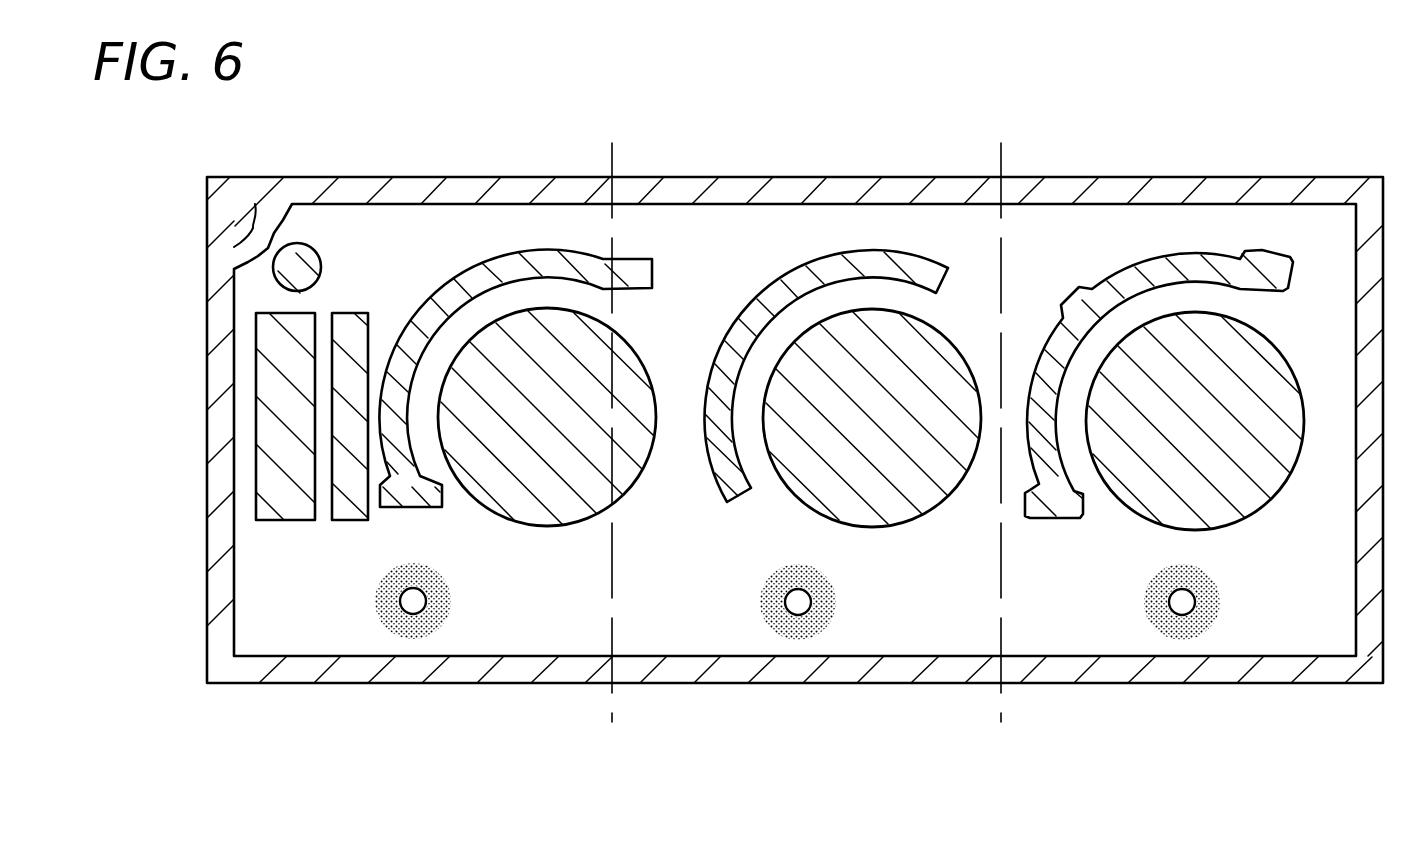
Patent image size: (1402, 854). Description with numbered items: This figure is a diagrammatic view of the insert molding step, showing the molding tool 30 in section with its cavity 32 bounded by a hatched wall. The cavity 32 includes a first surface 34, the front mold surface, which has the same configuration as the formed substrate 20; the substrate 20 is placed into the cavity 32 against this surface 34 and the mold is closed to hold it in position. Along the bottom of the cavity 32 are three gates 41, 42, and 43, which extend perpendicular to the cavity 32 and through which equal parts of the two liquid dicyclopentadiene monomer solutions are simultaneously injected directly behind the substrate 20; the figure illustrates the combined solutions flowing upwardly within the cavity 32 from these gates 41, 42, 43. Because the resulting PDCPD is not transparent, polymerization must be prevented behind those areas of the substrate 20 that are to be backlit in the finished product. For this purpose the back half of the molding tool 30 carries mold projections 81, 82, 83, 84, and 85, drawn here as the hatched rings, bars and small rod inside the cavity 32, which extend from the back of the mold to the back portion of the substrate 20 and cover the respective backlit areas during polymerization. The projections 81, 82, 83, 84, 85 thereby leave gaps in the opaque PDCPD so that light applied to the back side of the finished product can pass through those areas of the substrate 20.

The formed substrate 20 is at (253, 263).
The molding tool 30 is at (1322, 170).
The cavity 32 is at (300, 232).
The first surface 34 is at (258, 212).
The gate 41 is at (413, 613).
The gate 42 is at (798, 614).
The gate 43 is at (1182, 614).
The mold projection 81 is at (1215, 263).
The mold projection 82 is at (908, 260).
The mold projection 83 is at (627, 258).
The mold projection 84 is at (365, 312).
The mold projection 85 is at (318, 247).